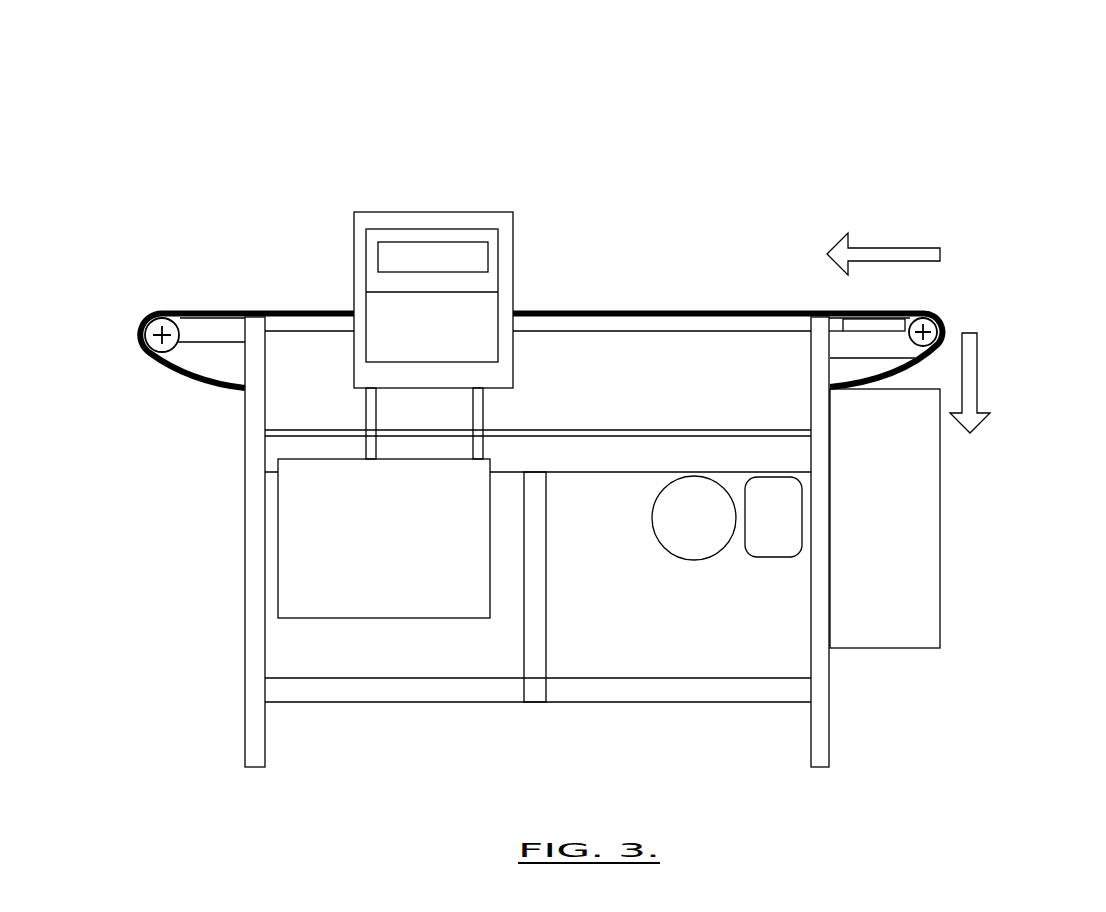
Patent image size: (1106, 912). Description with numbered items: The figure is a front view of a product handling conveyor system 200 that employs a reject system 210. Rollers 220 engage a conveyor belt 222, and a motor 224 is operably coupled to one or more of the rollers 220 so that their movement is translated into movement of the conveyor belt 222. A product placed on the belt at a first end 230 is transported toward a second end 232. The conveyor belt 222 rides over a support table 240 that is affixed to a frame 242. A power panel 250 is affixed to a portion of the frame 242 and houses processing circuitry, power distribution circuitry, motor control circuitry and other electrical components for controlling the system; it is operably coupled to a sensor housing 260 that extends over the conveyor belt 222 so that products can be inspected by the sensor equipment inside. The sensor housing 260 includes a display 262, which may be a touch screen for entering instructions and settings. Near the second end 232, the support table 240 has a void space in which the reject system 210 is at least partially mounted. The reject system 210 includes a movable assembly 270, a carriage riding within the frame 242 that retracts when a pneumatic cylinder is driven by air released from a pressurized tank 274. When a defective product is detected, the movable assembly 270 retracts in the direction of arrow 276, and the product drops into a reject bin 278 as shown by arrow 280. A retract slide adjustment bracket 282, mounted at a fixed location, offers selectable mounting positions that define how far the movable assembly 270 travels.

The product handling conveyor system 200 is at (733, 88).
The reject system 210 is at (984, 212).
The rollers 220 is at (160, 344).
The conveyor belt 222 is at (212, 310).
The motor 224 is at (682, 542).
The first end 230 is at (155, 307).
The second end 232 is at (960, 318).
The support table 240 is at (340, 323).
The frame 242 is at (497, 693).
The power panel 250 is at (322, 544).
The sensor housing 260 is at (513, 210).
The display 262 is at (398, 250).
The movable assembly 270 is at (892, 326).
The pressurized tank 274 is at (763, 535).
The arrow 276 is at (902, 256).
The reject bin 278 is at (912, 545).
The arrow 280 is at (972, 370).
The retract slide adjustment bracket 282 is at (845, 348).